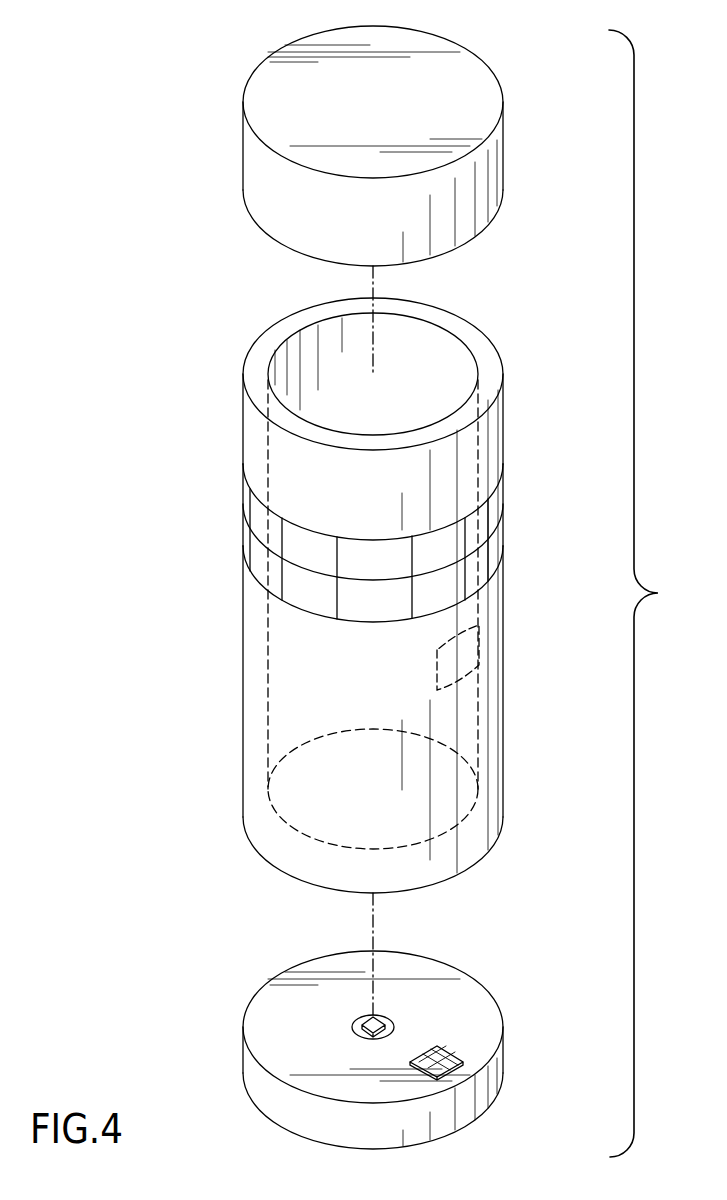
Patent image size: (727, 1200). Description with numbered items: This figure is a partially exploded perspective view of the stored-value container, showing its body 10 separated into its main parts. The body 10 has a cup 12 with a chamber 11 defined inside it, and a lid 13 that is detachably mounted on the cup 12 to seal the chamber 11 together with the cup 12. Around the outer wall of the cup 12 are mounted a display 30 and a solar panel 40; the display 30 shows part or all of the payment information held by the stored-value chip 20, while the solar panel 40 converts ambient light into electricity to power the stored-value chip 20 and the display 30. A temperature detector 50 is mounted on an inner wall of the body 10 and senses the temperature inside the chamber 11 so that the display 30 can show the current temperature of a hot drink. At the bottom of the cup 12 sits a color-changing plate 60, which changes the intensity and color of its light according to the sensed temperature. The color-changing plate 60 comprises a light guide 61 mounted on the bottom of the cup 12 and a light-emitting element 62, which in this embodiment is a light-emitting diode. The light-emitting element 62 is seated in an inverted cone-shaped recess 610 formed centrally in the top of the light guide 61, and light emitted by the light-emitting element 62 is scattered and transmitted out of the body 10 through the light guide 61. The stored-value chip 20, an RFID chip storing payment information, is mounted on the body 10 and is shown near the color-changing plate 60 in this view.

The body 10 is at (226, 651).
The chamber 11 is at (443, 392).
The cup 12 is at (252, 750).
The lid 13 is at (278, 72).
The stored-value chip 20 is at (470, 1061).
The display 30 is at (420, 585).
The solar panel 40 is at (483, 523).
The temperature detector 50 is at (467, 659).
The color-changing plate 60 is at (240, 1065).
The light guide 61 is at (440, 977).
The light-emitting element 62 is at (364, 1020).
The inverted cone-shaped recess 610 is at (392, 1024).